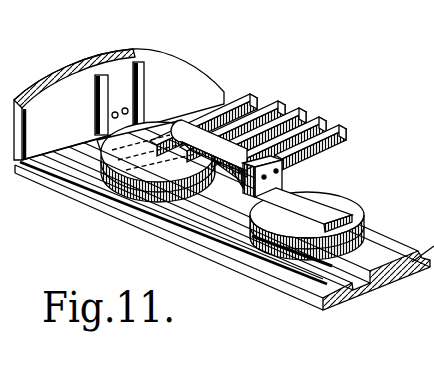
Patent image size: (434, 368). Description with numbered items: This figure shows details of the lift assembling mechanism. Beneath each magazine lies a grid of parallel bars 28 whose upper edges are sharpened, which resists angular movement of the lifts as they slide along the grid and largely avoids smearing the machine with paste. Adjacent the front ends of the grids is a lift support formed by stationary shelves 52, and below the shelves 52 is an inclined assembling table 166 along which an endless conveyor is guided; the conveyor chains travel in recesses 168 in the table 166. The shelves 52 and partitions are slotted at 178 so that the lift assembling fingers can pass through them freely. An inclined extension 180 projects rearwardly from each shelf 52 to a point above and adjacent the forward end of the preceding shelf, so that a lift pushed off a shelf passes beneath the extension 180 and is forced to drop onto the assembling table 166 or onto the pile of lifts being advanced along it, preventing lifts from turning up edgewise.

The parallel bars 28 is at (252, 94).
The stationary shelves 52 is at (97, 160).
The assembling table 166 is at (167, 234).
The recesses 168 is at (307, 291).
The slots 178 is at (142, 63).
The inclined extension 180 is at (295, 157).